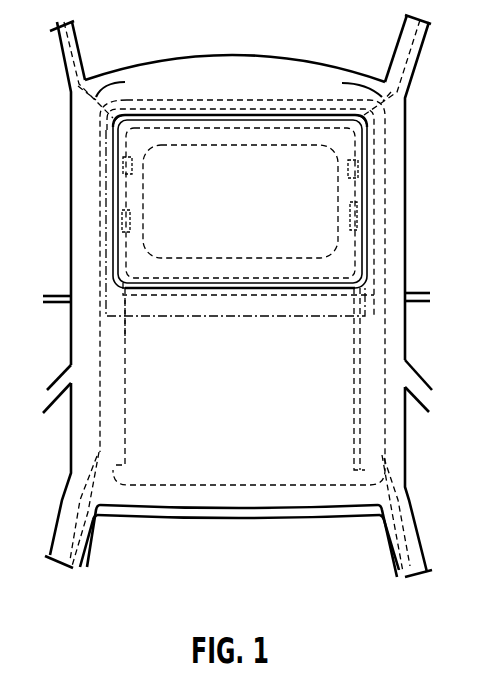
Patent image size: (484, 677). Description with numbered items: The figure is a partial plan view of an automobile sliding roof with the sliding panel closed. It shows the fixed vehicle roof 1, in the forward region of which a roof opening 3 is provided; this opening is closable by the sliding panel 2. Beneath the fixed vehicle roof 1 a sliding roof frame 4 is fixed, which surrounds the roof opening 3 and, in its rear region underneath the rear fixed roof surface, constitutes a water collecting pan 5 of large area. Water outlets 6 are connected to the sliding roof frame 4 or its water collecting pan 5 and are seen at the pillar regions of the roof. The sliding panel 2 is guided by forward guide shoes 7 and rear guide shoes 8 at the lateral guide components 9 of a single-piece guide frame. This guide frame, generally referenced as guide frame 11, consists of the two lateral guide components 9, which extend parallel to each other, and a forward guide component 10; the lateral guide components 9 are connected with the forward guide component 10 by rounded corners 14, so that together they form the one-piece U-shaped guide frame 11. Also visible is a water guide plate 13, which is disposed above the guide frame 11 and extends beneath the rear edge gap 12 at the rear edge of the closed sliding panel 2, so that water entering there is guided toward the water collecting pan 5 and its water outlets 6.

The fixed vehicle roof 1 is at (405, 350).
The sliding panel 2 is at (255, 214).
The roof opening 3 is at (214, 286).
The sliding roof frame 4 is at (263, 96).
The water collecting pan 5 is at (227, 518).
The water outlets 6 is at (432, 493).
The forward guide shoes 7 is at (134, 168).
The rear guide shoes 8 is at (129, 219).
The lateral guide components 9 is at (118, 401).
The forward guide component 10 is at (220, 124).
The guide frame 11 is at (125, 330).
The rear edge gap 12 is at (260, 290).
The water guide plate 13 is at (287, 318).
The rounded corners 14 is at (113, 122).